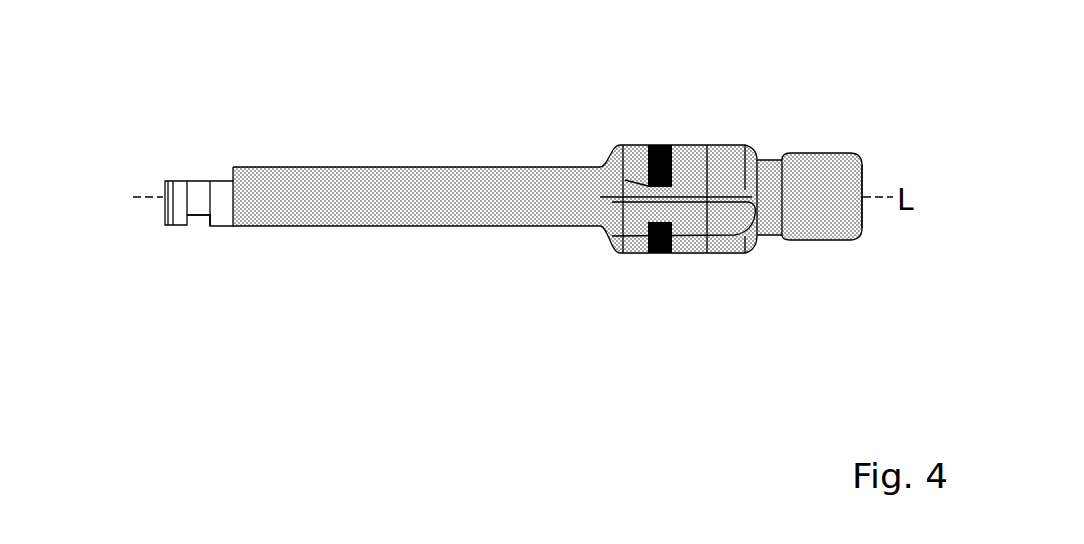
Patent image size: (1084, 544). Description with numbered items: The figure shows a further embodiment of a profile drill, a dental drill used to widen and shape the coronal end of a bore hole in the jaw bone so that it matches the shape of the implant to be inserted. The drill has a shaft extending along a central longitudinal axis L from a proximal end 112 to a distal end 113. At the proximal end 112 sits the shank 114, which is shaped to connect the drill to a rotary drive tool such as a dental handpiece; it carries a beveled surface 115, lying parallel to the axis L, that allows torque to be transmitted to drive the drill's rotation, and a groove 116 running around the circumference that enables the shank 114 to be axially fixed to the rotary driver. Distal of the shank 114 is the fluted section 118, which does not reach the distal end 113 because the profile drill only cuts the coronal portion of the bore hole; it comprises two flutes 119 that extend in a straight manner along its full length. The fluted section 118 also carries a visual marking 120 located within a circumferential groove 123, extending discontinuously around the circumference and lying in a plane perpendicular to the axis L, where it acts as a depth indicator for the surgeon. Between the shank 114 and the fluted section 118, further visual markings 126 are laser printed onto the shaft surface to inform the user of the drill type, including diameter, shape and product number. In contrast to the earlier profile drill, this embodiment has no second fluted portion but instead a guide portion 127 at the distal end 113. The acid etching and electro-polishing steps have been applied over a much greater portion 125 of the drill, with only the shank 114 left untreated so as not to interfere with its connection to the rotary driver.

The proximal end 112 is at (163, 205).
The distal end 113 is at (863, 182).
The shank 114 is at (232, 275).
The beveled surface 115 is at (180, 181).
The groove 116 is at (198, 223).
The fluted section 118 is at (747, 278).
The flutes 119 is at (643, 206).
The visual marking 120 is at (662, 147).
The circumferential groove 123 is at (652, 147).
The treated portion 125 is at (862, 357).
The visual markings 126 is at (433, 213).
The guide portion 127 is at (863, 278).